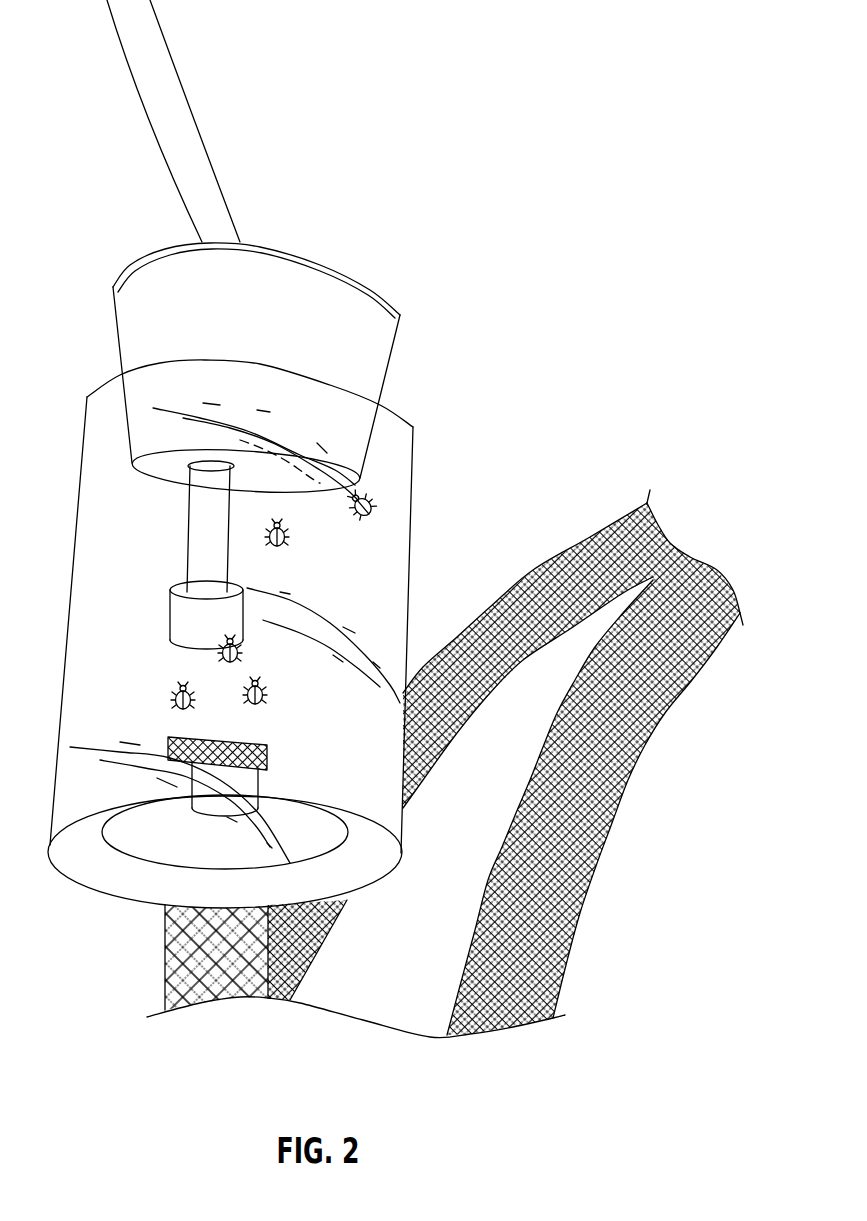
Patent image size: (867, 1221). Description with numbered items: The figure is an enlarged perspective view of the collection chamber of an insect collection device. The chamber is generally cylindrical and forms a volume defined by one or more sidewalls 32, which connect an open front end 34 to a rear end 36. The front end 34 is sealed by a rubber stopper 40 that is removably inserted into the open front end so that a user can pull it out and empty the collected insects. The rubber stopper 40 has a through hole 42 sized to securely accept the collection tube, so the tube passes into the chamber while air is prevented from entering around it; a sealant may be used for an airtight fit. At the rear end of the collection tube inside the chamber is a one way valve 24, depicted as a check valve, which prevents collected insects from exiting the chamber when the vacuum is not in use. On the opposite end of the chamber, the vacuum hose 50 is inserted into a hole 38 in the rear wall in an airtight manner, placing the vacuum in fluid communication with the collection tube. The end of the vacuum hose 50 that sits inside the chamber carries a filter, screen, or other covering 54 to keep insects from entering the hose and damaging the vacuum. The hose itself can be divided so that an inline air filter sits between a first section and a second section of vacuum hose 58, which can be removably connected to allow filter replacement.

The one way valve 24 is at (168, 613).
The sidewall 32 is at (72, 580).
The front end 34 is at (397, 399).
The rear end 36 is at (107, 900).
The hole 38 is at (210, 815).
The rubber stopper 40 is at (370, 312).
The through hole 42 is at (213, 462).
The vacuum hose 50 is at (602, 793).
The covering 54 is at (235, 743).
The second section of vacuum hose 58 is at (167, 982).